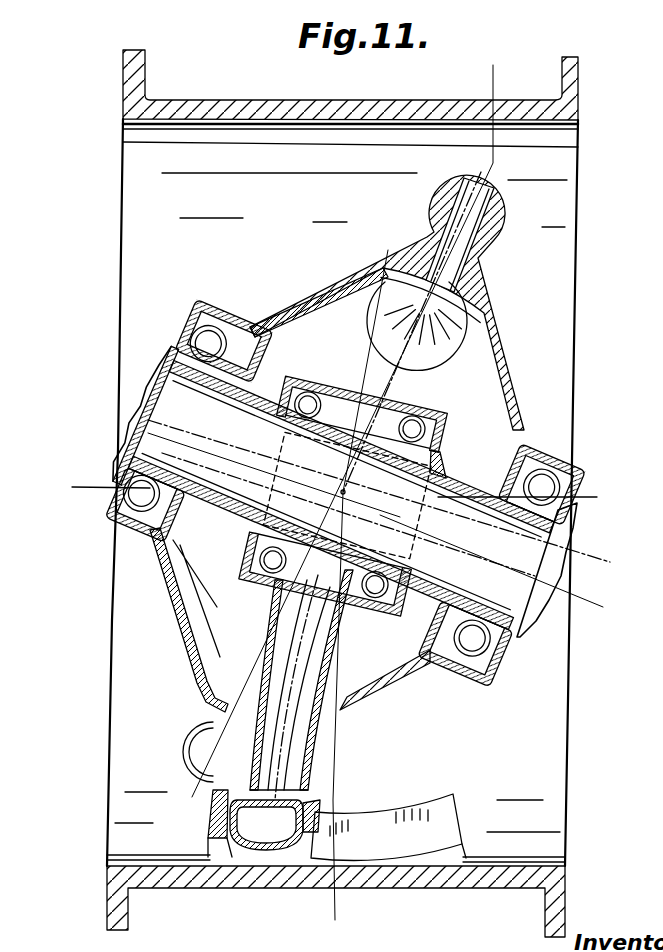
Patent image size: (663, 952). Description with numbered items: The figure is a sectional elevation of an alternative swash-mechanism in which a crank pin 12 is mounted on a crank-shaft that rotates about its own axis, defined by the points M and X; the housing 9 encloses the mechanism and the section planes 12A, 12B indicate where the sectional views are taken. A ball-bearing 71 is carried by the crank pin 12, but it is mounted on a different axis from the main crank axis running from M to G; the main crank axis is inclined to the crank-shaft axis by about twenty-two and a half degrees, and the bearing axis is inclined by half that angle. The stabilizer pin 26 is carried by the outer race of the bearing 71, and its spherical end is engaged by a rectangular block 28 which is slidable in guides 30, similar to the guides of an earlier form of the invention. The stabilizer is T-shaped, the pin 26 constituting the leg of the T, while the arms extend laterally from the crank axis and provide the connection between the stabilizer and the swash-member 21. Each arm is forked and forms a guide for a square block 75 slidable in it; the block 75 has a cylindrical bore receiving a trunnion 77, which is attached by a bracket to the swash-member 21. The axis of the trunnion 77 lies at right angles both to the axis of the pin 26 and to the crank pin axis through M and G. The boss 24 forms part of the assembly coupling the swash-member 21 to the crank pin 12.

The housing 9 is at (138, 447).
The crank pin 12 is at (502, 583).
The section line 12A is at (373, 381).
The section line 12B is at (518, 79).
The swash-member 21 is at (320, 297).
The upper shaft boss 24 is at (488, 210).
The stabilizer pin 26 is at (340, 643).
The rectangular block 28 is at (307, 803).
The guides 30 is at (447, 810).
The ball-bearing 71 is at (258, 536).
The square block 75 is at (369, 494).
The trunnion 77 is at (437, 453).
The main crank axis point G is at (138, 407).
The axis intersection point M is at (313, 459).
The crank-shaft axis point X is at (332, 495).